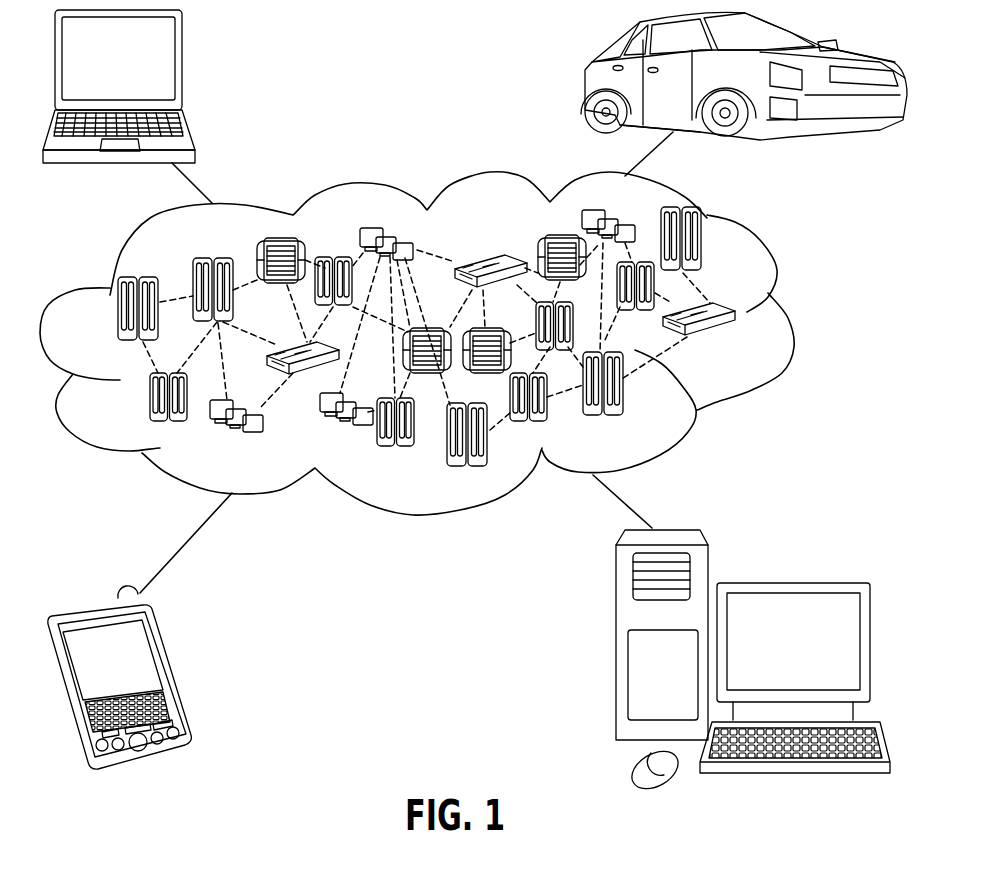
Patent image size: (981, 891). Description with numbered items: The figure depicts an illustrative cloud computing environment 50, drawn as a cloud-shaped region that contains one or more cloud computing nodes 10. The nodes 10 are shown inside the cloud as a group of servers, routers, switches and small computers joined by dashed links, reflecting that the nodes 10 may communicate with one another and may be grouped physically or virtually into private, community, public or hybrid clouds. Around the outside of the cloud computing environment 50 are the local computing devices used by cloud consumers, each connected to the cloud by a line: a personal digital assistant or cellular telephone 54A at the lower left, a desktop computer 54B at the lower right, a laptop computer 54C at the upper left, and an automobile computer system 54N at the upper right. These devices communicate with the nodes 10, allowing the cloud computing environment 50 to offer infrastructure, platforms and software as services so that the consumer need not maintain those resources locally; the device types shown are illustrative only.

The cloud computing nodes 10 is at (737, 345).
The cloud computing environment 50 is at (788, 323).
The personal digital assistant or cellular telephone 54A is at (172, 672).
The desktop computer 54B is at (790, 583).
The laptop computer 54C is at (182, 68).
The automobile computer system 54N is at (590, 82).